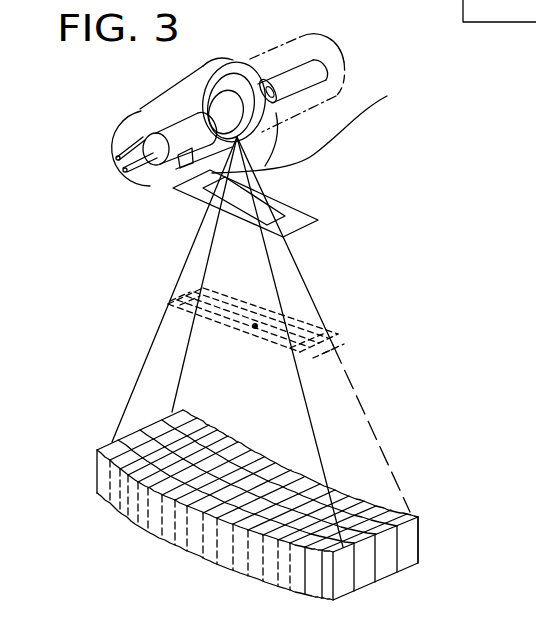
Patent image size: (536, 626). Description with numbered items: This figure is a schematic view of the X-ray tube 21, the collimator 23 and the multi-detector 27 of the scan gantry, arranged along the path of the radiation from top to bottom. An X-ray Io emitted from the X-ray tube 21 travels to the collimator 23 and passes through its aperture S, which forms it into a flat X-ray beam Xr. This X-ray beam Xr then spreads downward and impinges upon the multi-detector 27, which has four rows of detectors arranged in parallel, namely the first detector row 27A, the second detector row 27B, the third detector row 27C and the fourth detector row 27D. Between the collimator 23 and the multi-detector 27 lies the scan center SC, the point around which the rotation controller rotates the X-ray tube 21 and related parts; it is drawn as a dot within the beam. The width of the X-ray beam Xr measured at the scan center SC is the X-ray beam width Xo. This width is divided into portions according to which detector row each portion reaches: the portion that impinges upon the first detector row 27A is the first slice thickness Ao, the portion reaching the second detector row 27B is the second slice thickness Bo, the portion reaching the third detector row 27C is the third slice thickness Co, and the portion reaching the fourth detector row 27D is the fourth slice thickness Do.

The X-ray tube 21 is at (150, 92).
The X-ray Io is at (310, 127).
The collimator 23 is at (295, 214).
The aperture S is at (288, 198).
The X-ray beam Xr is at (224, 234).
The fourth slice thickness Do is at (228, 305).
The third slice thickness Co is at (217, 302).
The second slice thickness Bo is at (208, 310).
The first slice thickness Ao is at (197, 312).
The scan center SC is at (255, 325).
The X-ray beam width Xo is at (288, 350).
The multi-detector 27 is at (85, 460).
The first detector row 27A is at (355, 543).
The second detector row 27B is at (377, 535).
The third detector row 27C is at (398, 525).
The fourth detector row 27D is at (418, 515).